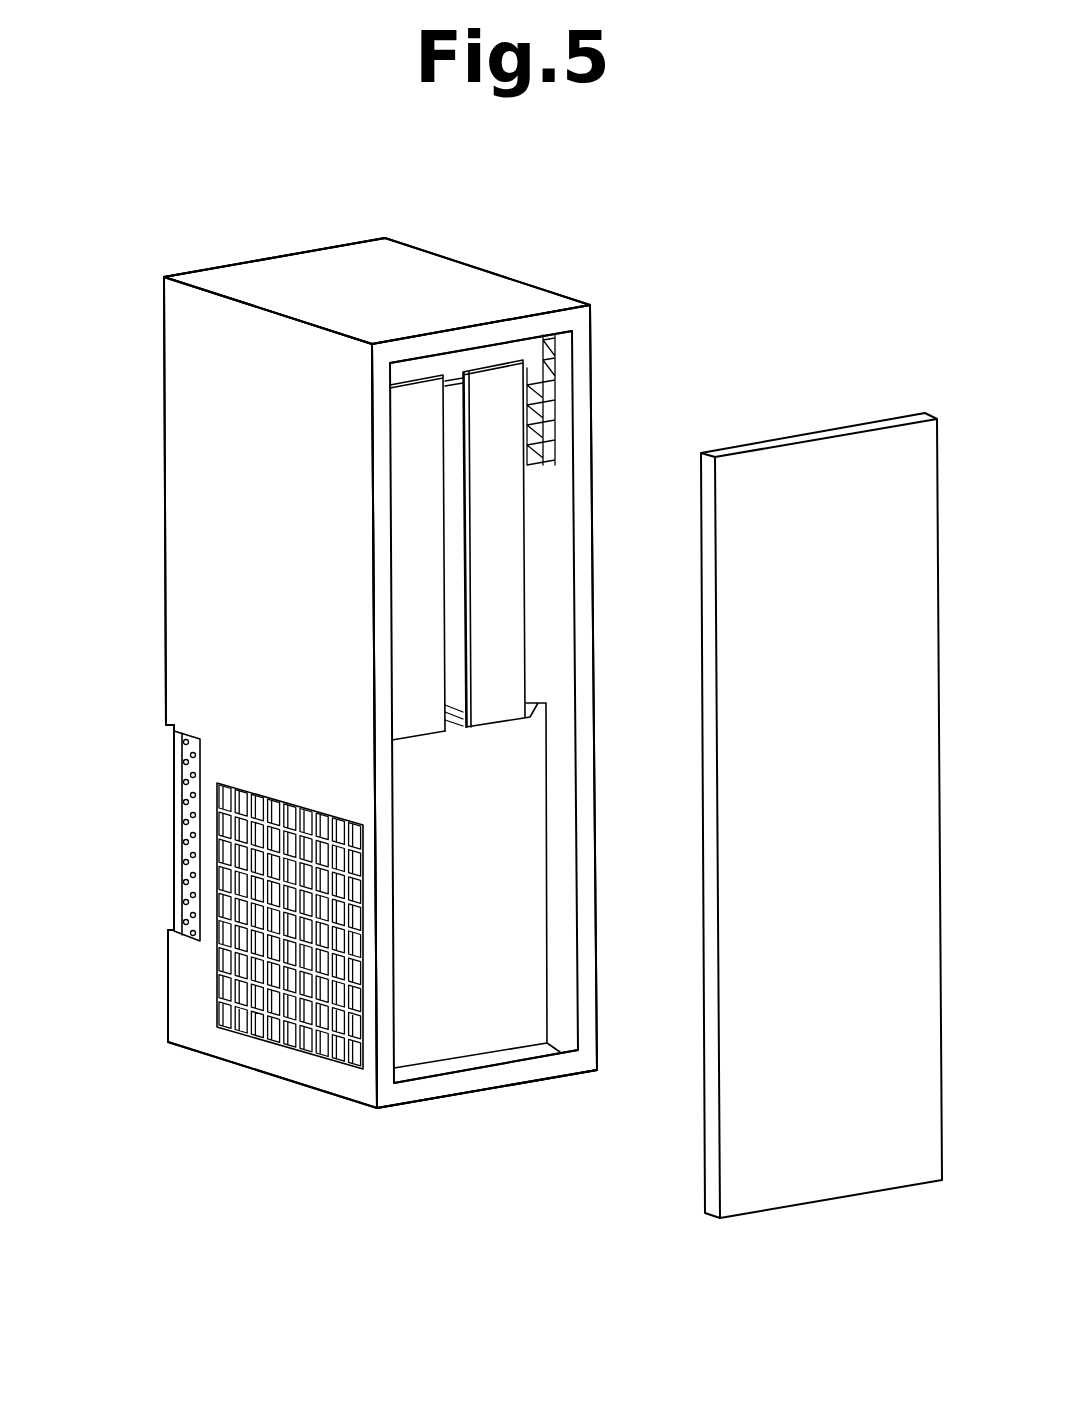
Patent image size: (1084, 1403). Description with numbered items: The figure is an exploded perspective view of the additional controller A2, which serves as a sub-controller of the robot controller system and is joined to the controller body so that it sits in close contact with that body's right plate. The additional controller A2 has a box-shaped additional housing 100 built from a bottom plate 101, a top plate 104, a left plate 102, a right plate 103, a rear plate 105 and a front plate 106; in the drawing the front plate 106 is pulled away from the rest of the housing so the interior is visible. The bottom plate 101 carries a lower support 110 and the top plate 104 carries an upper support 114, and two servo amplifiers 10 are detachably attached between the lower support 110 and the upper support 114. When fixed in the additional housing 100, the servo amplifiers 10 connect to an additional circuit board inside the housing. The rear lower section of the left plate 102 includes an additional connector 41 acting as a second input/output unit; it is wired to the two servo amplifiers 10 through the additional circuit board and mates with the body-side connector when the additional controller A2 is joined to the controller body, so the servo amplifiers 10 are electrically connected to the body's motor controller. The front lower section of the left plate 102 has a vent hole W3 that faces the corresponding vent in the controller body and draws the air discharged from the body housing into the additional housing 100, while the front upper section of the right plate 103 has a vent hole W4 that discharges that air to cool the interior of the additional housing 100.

The additional housing 100 is at (372, 252).
The bottom plate 101 is at (470, 1083).
The left plate 102 is at (177, 473).
The right plate 103 is at (580, 655).
The top plate 104 is at (470, 277).
The rear plate 105 is at (247, 260).
The front plate 106 is at (840, 448).
The lower support 110 is at (532, 797).
The upper support 114 is at (448, 362).
The servo amplifier 10 is at (433, 586).
The additional connector 41 is at (181, 808).
The vent hole W3 is at (272, 808).
The vent hole W4 is at (548, 395).
The additional controller A2 is at (740, 255).